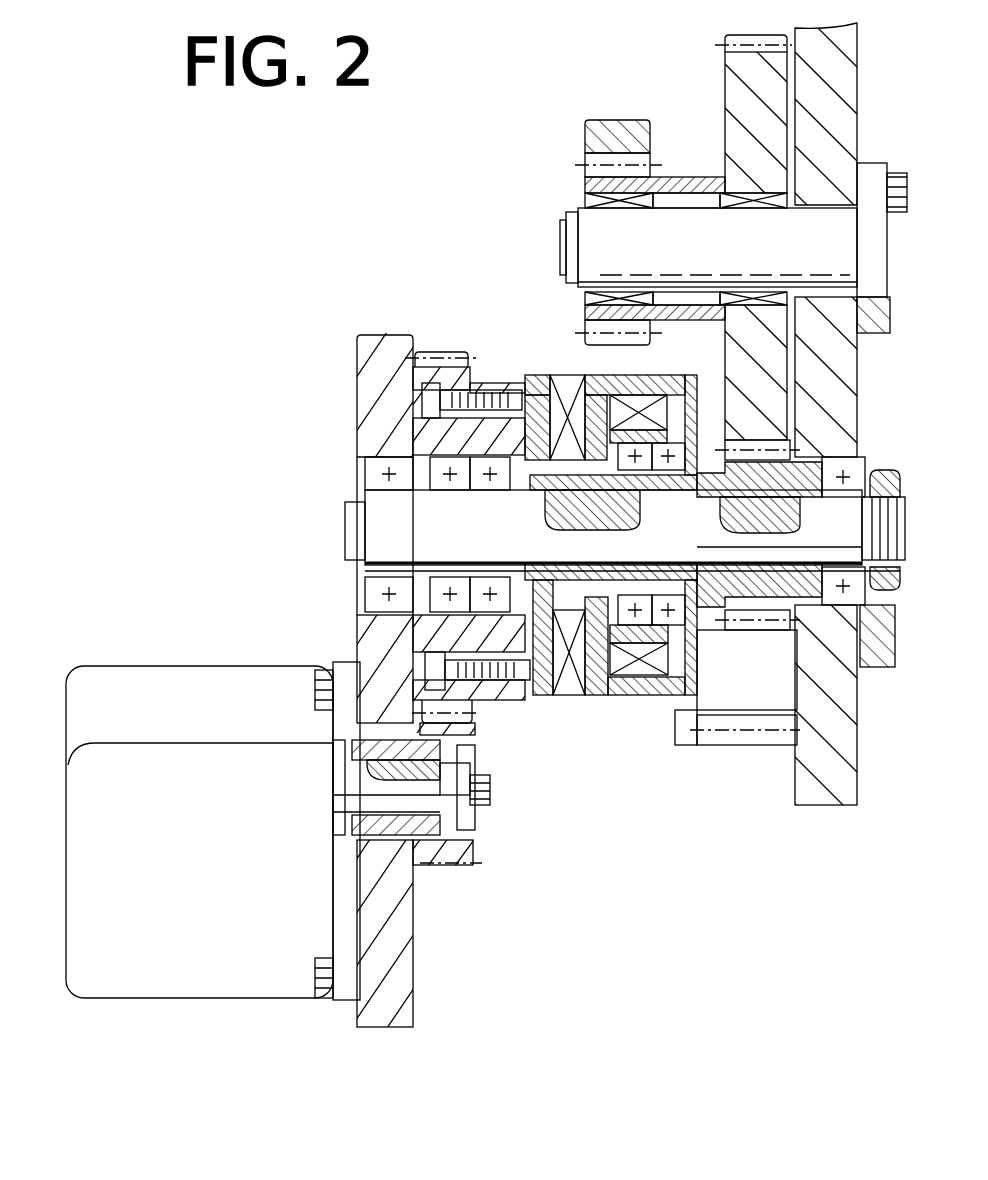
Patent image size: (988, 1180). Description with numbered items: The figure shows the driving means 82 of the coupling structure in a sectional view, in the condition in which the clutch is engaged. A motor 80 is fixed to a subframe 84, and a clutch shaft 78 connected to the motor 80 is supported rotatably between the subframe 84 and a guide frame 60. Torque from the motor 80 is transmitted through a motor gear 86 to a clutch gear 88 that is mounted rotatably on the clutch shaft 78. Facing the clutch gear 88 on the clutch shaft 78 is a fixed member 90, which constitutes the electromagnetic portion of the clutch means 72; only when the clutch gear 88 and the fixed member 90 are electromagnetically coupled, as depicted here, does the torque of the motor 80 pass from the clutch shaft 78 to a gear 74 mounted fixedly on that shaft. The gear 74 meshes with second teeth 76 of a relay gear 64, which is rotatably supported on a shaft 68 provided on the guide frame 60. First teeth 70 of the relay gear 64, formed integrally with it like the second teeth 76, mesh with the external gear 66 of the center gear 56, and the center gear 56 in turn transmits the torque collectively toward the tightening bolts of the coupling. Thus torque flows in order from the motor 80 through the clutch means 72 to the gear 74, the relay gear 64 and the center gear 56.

The center gear 56 is at (610, 127).
The guide frame 60 is at (827, 778).
The relay gear 64 is at (685, 183).
The external gear 66 is at (600, 158).
The shaft 68 is at (603, 250).
The first teeth 70 is at (590, 337).
The clutch means 72 is at (572, 702).
The gear 74 is at (747, 597).
The second teeth 76 is at (722, 440).
The clutch shaft 78 is at (455, 535).
The motor 80 is at (200, 780).
The driving means 82 is at (483, 818).
The subframe 84 is at (395, 948).
The motor gear 86 is at (440, 866).
The clutch gear 88 is at (500, 700).
The fixed member 90 is at (653, 688).